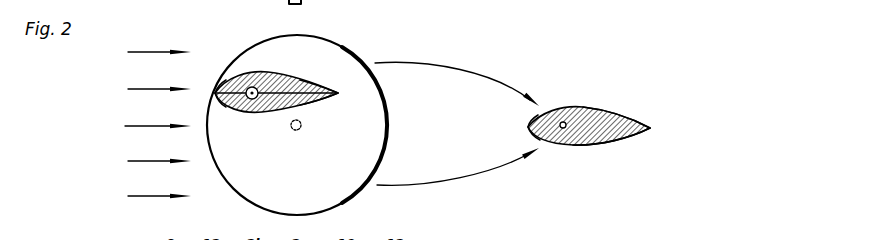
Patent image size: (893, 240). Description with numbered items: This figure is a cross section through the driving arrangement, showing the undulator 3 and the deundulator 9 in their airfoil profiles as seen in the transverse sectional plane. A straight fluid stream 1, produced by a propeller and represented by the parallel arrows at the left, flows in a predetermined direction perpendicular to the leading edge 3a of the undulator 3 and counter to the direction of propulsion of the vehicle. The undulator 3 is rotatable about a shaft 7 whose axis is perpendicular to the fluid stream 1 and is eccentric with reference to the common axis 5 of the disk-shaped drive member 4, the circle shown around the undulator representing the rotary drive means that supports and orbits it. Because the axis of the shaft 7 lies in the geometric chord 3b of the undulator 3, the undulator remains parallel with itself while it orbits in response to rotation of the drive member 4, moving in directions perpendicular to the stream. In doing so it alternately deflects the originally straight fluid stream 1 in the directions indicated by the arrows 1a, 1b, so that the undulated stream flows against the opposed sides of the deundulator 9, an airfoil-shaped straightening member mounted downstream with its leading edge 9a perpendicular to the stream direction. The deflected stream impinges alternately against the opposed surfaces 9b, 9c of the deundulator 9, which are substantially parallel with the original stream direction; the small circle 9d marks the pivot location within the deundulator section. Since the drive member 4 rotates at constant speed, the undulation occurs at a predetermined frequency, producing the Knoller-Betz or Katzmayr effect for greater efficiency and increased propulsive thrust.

The fluid stream 1 is at (128, 52).
The deflection direction arrow 1a is at (447, 63).
The deflection direction arrow 1b is at (438, 185).
The undulator 3 is at (236, 80).
The leading edge 3a is at (216, 90).
The geometric chord 3b is at (302, 90).
The disk-shaped drive member 4 is at (349, 50).
The common axis 5 is at (300, 129).
The shaft 7 is at (252, 86).
The deundulator 9 is at (597, 141).
The leading edge 9a is at (526, 127).
The surface 9b is at (612, 109).
The surface 9c is at (571, 146).
The guide vane pivot axis 9d is at (572, 108).